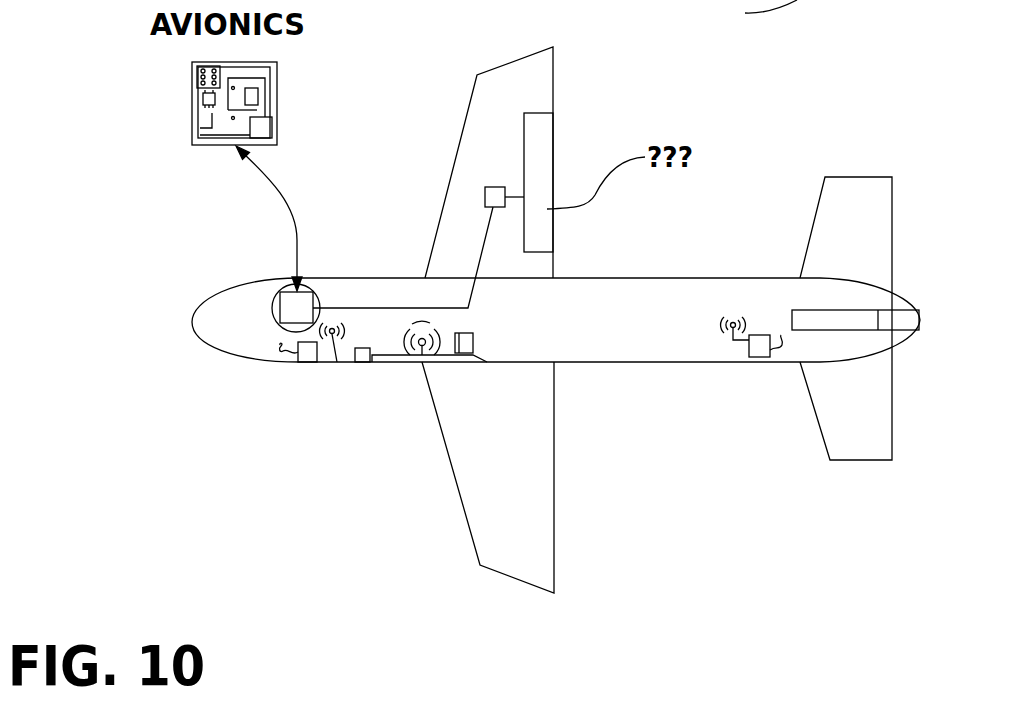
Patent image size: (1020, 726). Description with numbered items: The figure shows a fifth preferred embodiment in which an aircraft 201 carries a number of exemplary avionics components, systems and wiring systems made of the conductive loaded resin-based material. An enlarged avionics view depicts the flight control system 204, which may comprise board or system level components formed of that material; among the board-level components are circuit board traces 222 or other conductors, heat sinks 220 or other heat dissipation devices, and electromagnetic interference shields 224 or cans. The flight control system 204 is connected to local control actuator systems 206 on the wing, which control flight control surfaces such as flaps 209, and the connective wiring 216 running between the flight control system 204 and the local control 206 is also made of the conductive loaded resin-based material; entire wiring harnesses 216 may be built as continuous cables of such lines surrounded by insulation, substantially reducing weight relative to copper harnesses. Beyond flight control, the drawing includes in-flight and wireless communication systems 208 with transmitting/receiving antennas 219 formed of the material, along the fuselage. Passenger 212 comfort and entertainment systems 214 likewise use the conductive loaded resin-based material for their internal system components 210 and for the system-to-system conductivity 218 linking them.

The aircraft 201 is at (748, 278).
The flight control system 204 is at (278, 110).
The local control actuator system 206 is at (485, 193).
The in-flight communication system 208 is at (752, 357).
The flap 209 is at (278, 362).
The internal system component 210 is at (300, 362).
The passenger 212 is at (473, 353).
The comfort and entertainment system 214 is at (423, 362).
The connective wiring 216 is at (367, 310).
The system-to-system conductivity 218 is at (393, 362).
The transmitting/receiving antenna 219 is at (338, 362).
The heat sink 220 is at (198, 80).
The circuit board trace 222 is at (268, 80).
The electromagnetic interference shield 224 is at (272, 128).